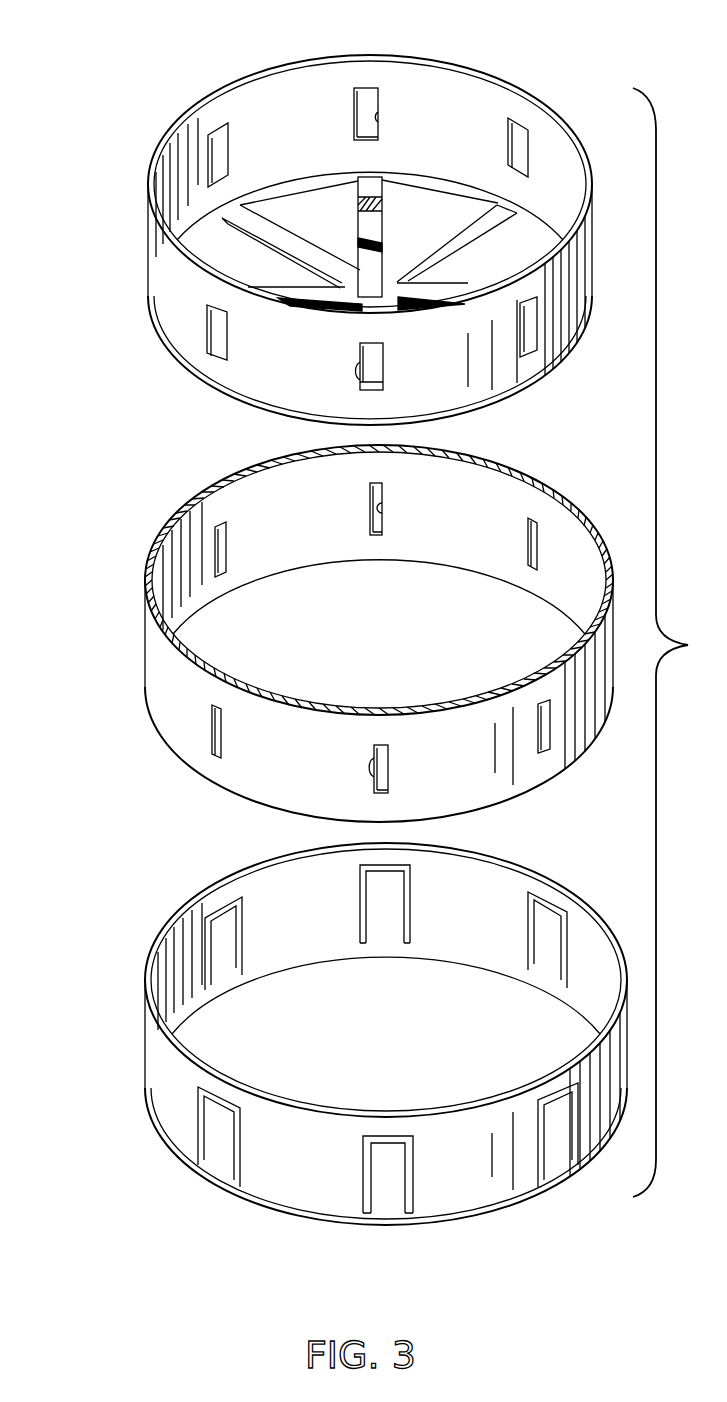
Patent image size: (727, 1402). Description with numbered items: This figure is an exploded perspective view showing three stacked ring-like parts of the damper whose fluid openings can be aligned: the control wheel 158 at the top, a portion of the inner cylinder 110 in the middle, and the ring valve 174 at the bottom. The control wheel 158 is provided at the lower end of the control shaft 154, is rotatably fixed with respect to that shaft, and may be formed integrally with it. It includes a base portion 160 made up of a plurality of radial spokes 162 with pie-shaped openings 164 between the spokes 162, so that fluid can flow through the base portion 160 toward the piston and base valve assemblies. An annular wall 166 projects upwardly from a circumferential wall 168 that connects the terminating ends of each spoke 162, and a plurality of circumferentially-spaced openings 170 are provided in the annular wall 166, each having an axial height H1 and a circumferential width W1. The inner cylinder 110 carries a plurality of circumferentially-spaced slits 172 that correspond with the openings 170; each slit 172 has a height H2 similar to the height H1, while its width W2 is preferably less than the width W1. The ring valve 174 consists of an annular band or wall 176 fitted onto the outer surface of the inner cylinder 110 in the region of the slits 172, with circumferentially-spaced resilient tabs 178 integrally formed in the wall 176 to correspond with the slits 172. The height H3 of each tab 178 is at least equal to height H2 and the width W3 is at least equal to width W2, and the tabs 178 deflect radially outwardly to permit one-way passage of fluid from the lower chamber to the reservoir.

The inner cylinder 110 is at (143, 663).
The control shaft 154 is at (418, 232).
The control wheel 158 is at (146, 276).
The base portion 160 is at (325, 272).
The radial spokes 162 is at (447, 247).
The pie-shaped openings 164 is at (450, 198).
The annular wall 166 is at (292, 388).
The circumferential wall 168 is at (545, 226).
The openings 170 is at (533, 345).
The slits 172 is at (378, 768).
The ring valve 174 is at (143, 1108).
The annular band or wall 176 is at (178, 1128).
The resilient tabs 178 is at (380, 1147).
The axial height of opening H1 is at (397, 347).
The circumferential width of opening W1 is at (345, 404).
The height of slit H2 is at (403, 750).
The width of slit W2 is at (350, 807).
The height of tab H3 is at (440, 1141).
The width of tab W3 is at (322, 1245).